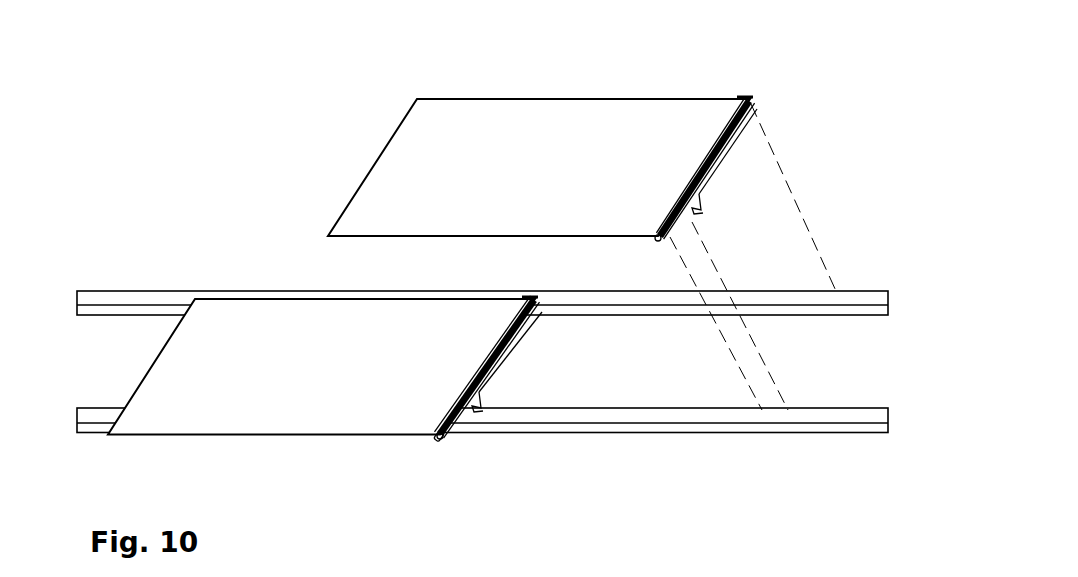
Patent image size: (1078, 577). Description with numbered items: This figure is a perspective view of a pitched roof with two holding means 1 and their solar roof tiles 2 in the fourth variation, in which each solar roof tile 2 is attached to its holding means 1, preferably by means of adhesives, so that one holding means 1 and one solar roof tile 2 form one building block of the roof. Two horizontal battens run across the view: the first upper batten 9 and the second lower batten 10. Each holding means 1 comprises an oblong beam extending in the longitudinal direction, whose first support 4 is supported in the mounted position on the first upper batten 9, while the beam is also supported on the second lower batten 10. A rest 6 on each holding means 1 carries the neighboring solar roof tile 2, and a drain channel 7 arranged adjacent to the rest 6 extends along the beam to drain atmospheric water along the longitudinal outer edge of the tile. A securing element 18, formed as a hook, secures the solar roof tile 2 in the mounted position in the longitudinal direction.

The holding means 1 is at (579, 283).
The solar roof tile 2 is at (395, 224).
The first support 4 is at (689, 283).
The rest 6 is at (708, 340).
The drain channel 7 is at (594, 327).
The first upper batten 9 is at (464, 264).
The second lower batten 10 is at (463, 466).
The securing element 18 is at (370, 491).